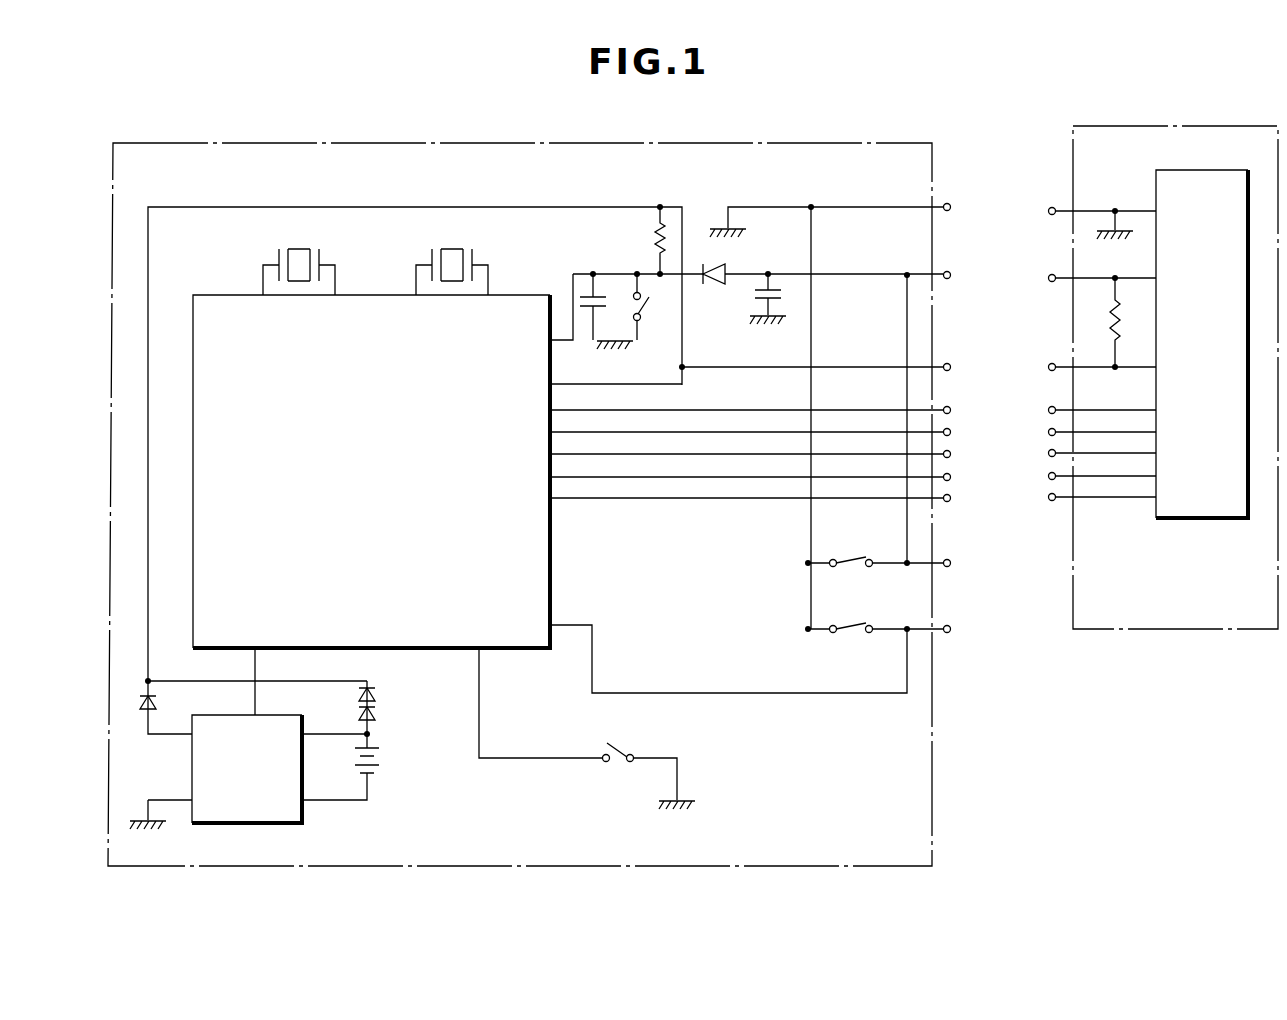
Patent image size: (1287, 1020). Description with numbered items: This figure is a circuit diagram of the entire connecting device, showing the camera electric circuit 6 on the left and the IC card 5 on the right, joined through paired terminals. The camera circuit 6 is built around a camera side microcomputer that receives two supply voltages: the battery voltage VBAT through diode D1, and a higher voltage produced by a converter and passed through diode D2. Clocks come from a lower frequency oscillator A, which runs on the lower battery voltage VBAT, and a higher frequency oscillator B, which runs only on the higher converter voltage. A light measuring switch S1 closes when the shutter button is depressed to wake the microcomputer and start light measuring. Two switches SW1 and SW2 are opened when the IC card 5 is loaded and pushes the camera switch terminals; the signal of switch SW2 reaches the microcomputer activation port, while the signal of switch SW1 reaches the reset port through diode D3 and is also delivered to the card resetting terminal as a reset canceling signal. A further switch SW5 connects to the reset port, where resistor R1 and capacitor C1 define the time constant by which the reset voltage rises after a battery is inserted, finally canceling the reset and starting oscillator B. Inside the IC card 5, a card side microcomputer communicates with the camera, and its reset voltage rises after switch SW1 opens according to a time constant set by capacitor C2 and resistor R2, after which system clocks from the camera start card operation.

The electric circuit of the electronic appliance 6 is at (795, 143).
The IC card 5 is at (1178, 610).
The resistor R1 is at (646, 240).
The resistor R2 is at (1125, 322).
The capacitor C1 is at (598, 307).
The capacitor C2 is at (779, 294).
The diode D1 is at (380, 704).
The diode D2 is at (161, 703).
The diode D3 is at (712, 287).
The switch SW1 is at (875, 550).
The switch SW2 is at (875, 616).
The switch SW5 is at (655, 308).
The light measuring switch S1 is at (578, 724).
The battery voltage VBAT is at (388, 761).
The lower frequency oscillator A is at (299, 257).
The higher frequency oscillator B is at (452, 257).